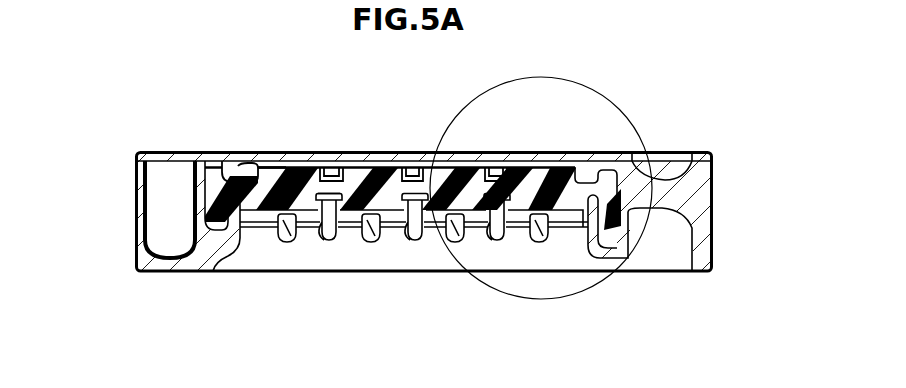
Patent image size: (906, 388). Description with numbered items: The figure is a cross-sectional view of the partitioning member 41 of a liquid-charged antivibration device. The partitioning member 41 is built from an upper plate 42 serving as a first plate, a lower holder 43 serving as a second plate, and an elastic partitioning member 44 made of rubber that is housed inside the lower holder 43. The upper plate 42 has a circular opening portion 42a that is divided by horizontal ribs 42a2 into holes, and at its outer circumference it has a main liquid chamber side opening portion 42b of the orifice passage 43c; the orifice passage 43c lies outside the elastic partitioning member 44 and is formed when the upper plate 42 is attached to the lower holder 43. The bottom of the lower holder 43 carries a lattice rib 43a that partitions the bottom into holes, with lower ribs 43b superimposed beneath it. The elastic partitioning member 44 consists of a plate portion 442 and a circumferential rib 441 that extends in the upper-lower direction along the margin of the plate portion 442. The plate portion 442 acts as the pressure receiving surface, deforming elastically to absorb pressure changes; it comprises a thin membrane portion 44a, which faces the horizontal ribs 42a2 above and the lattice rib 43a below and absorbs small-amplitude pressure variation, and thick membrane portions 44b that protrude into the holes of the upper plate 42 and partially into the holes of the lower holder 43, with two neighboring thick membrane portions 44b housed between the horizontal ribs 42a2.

The partitioning member 41 is at (165, 98).
The upper plate 42 is at (705, 149).
The opening portion 42a is at (250, 163).
The horizontal ribs 42a2 is at (324, 167).
The main liquid chamber side opening portion 42b is at (658, 160).
The lower holder 43 is at (719, 258).
The rib 43a is at (323, 244).
The lower ribs 43b is at (286, 244).
The orifice passage 43c is at (150, 208).
The elastic partitioning member 44 is at (556, 160).
The thin membrane portion 44a is at (331, 192).
The thick membrane portions 44b is at (512, 172).
The circumferential rib 441 is at (213, 176).
The plate portion 442 is at (269, 182).